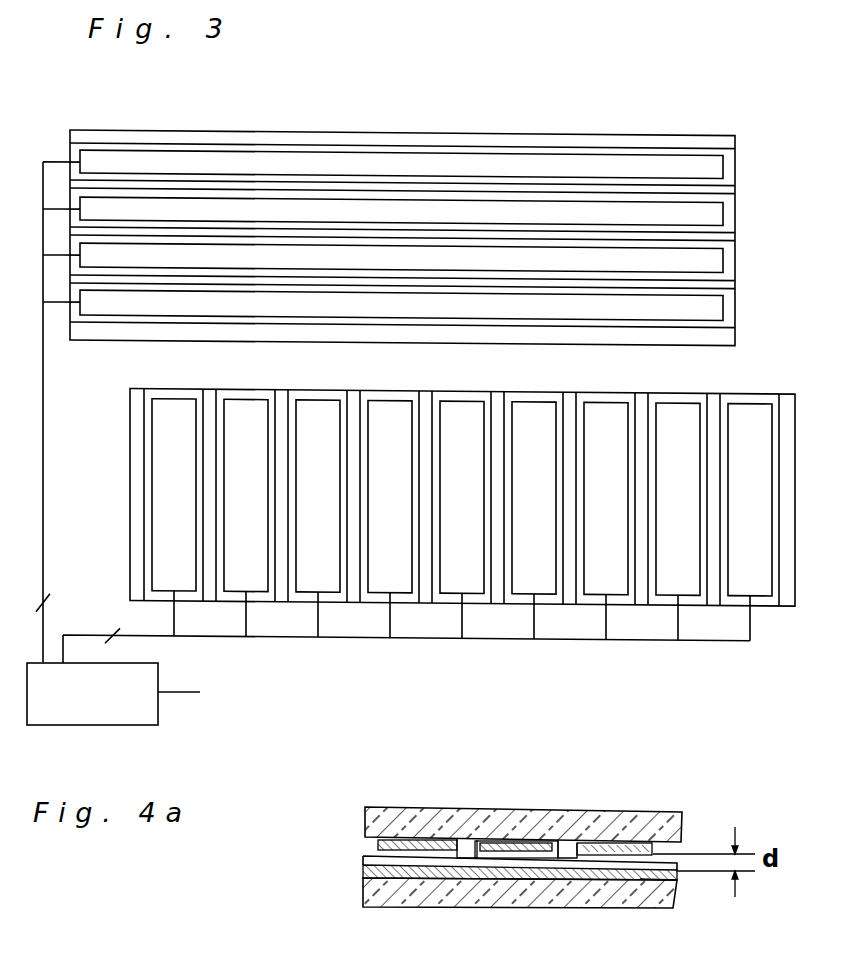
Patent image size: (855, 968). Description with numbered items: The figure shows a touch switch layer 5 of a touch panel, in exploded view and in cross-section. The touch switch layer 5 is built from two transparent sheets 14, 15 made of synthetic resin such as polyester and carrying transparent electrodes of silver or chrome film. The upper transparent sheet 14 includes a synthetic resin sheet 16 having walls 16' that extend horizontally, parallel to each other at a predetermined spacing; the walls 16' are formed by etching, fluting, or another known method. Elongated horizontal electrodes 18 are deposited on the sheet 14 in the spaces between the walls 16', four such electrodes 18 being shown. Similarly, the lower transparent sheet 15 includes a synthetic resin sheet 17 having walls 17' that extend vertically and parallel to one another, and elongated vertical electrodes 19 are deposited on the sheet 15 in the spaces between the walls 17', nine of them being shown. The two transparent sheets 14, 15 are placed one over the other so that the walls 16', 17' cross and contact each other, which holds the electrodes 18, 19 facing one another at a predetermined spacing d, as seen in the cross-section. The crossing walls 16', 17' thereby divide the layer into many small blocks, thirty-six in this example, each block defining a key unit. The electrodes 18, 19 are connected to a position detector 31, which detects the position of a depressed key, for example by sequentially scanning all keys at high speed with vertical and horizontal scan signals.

In FIG. 4a, the touch switch layer 5 is at (495, 844).
In FIG. 3, the transparent sheet 14 is at (417, 340).
In FIG. 4a, the transparent sheet 14 is at (491, 796).
In FIG. 3, the transparent sheet 15 is at (421, 504).
In FIG. 4a, the transparent sheet 15 is at (509, 902).
In FIG. 3, the synthetic resin sheet 16 is at (402, 204).
In FIG. 4a, the synthetic resin sheet 16 is at (537, 796).
In FIG. 3, the walls 16' is at (434, 212).
In FIG. 4a, the walls 16' is at (525, 796).
In FIG. 3, the synthetic resin sheet 17 is at (443, 498).
In FIG. 4a, the synthetic resin sheet 17 is at (520, 915).
In FIG. 3, the walls 17' is at (445, 473).
In FIG. 4a, the walls 17' is at (686, 915).
In FIG. 3, the horizontal electrodes 18 is at (547, 260).
In FIG. 4a, the horizontal electrodes 18 is at (603, 845).
In FIG. 3, the vertical electrodes 19 is at (318, 545).
In FIG. 4a, the vertical electrodes 19 is at (503, 877).
In FIG. 3, the position detector 31 is at (113, 719).